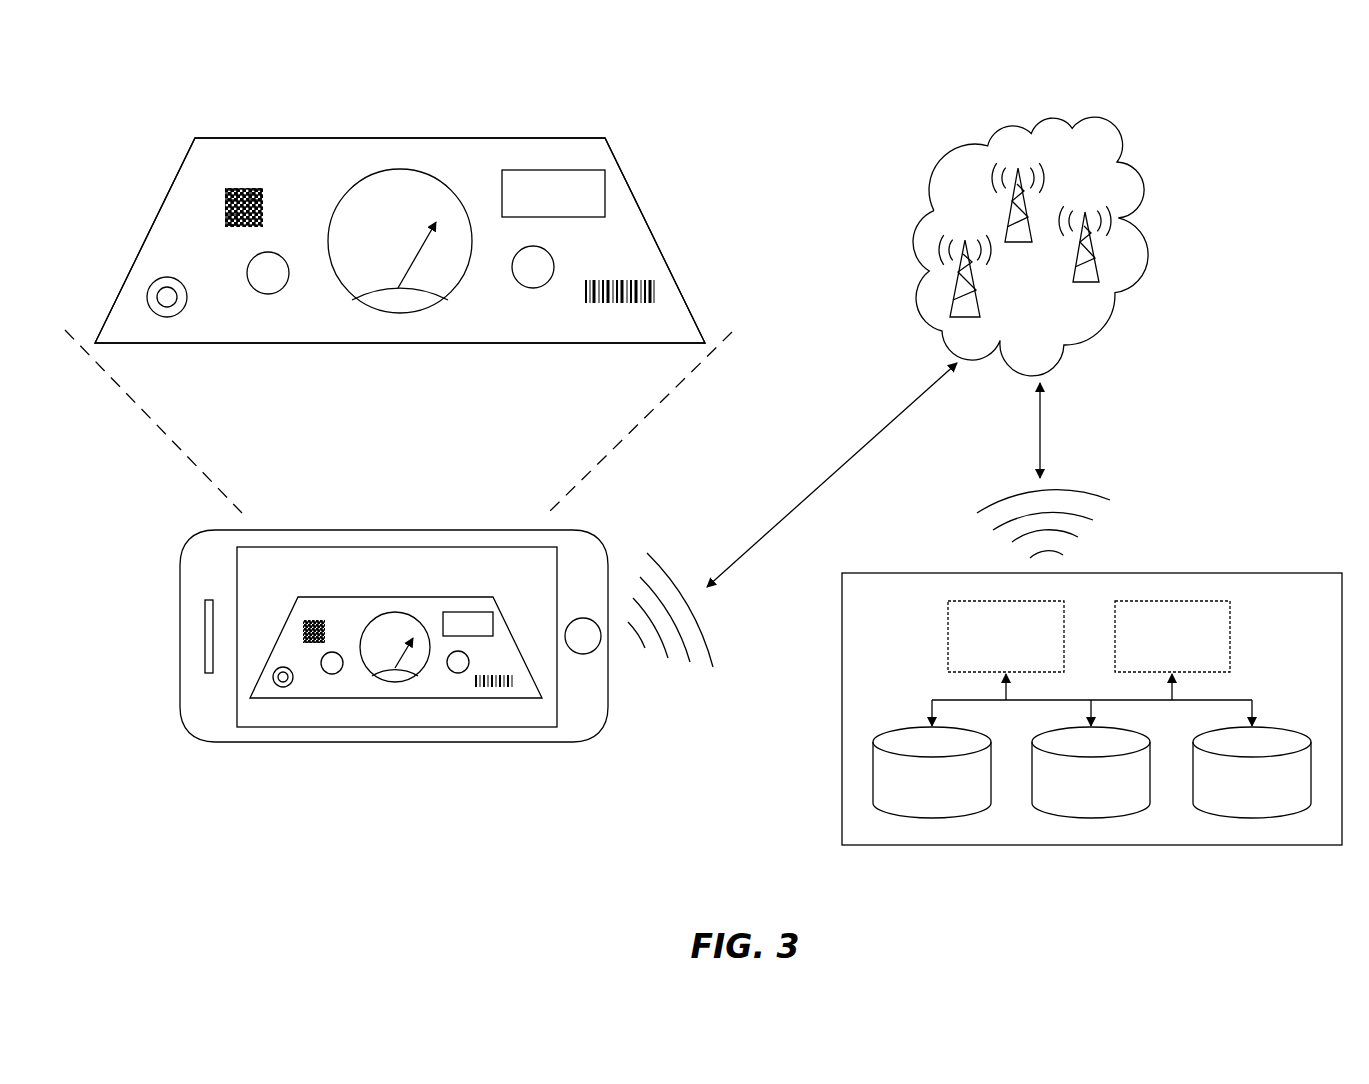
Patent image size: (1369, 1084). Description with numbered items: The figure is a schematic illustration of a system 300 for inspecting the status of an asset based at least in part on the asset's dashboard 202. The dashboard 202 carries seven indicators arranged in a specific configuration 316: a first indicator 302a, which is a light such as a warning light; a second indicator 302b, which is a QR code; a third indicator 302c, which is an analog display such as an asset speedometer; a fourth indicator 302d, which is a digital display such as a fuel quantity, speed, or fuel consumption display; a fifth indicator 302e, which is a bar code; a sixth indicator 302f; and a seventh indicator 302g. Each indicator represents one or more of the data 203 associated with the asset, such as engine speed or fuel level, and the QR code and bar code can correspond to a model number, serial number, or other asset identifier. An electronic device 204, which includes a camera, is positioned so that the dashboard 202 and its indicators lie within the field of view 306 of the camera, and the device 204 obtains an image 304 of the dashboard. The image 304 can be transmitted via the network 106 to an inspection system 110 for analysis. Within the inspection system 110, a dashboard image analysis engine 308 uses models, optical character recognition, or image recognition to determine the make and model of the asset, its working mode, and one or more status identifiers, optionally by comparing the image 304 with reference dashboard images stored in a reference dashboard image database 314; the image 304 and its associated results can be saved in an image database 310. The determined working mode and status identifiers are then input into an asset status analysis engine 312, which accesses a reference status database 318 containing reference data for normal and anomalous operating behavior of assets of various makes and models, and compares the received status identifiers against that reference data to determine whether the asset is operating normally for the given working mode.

The network 106 is at (1115, 132).
The inspection system 110 is at (1213, 573).
The dashboard 202 is at (565, 138).
The data 203 is at (373, 158).
The electronic device 204 is at (514, 742).
The system 300 is at (1228, 362).
The first indicator 302a is at (148, 297).
The second indicator 302b is at (238, 188).
The third indicator 302c is at (408, 168).
The fourth indicator 302d is at (605, 184).
The fifth indicator 302e is at (655, 290).
The sixth indicator 302f is at (533, 288).
The seventh indicator 302g is at (268, 294).
The image 304 is at (349, 712).
The field of view 306 is at (656, 406).
The dashboard image analysis engine 308 is at (1006, 636).
The image database 310 is at (932, 772).
The asset status analysis engine 312 is at (1172, 636).
The reference dashboard image database 314 is at (1091, 772).
The configuration 316 is at (481, 104).
The reference status database 318 is at (1252, 772).